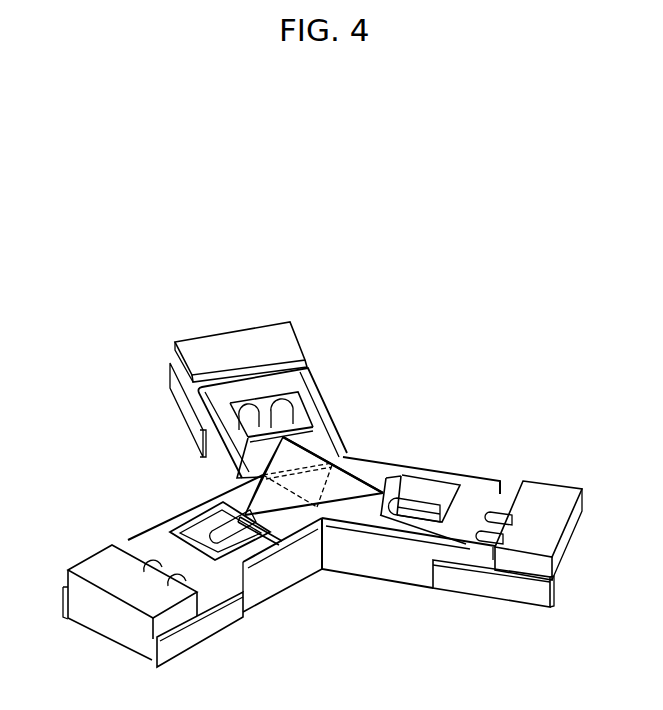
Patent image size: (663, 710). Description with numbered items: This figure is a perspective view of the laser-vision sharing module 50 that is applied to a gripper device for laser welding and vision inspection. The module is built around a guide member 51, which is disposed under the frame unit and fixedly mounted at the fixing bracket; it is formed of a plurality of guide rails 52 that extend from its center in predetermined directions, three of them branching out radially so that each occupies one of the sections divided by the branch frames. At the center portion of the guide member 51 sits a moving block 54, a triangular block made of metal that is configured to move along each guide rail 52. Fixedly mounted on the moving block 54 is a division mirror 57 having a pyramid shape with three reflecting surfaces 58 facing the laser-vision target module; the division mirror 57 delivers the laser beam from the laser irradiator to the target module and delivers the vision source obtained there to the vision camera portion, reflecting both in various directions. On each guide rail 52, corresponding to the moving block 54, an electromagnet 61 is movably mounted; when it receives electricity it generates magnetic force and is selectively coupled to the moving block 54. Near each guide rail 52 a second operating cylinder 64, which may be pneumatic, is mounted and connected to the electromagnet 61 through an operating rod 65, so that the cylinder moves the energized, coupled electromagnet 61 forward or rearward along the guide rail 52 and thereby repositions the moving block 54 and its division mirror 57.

The laser-vision sharing module 50 is at (338, 173).
The guide member 51 is at (363, 580).
The guide rail 52 is at (306, 372).
The moving block 54 is at (299, 500).
The division mirror 57 is at (357, 473).
The reflecting surface 58 is at (316, 422).
The electromagnet 61 is at (380, 480).
The second operating cylinder 64 is at (232, 340).
The operating rod 65 is at (282, 412).